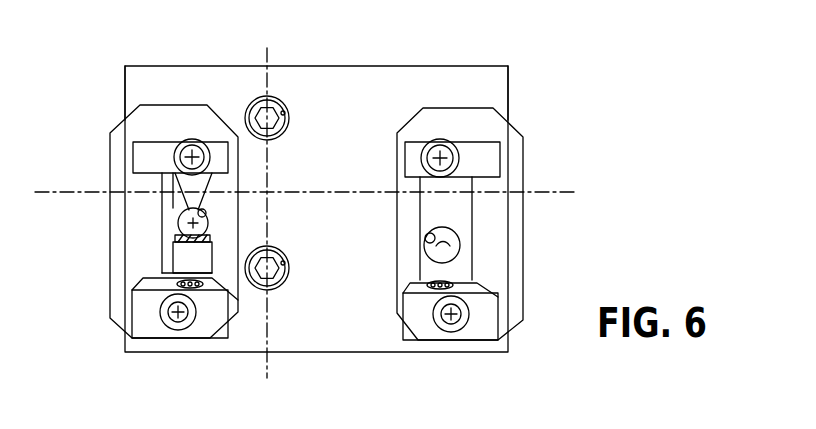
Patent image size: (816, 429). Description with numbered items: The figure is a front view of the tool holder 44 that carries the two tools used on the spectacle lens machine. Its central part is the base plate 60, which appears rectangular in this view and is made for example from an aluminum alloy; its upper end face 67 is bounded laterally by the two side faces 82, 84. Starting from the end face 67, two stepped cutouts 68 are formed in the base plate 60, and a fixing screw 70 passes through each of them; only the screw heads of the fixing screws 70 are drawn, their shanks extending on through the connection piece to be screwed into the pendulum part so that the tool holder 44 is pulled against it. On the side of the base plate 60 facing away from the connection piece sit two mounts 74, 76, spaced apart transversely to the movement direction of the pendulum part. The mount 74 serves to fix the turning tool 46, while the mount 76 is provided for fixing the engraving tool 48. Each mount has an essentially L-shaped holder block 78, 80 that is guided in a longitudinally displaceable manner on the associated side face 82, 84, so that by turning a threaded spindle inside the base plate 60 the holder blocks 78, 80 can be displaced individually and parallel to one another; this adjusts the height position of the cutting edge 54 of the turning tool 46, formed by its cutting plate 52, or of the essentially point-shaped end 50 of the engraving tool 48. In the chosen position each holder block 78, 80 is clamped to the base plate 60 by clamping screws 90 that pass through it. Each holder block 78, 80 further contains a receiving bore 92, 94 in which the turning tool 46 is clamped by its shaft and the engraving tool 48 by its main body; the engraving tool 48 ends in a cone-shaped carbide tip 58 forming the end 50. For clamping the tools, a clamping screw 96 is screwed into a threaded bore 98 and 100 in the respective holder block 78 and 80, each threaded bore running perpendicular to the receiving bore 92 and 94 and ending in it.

The tool holder 44 is at (537, 245).
The turning tool 46 is at (173, 240).
The engraving tool 48 is at (459, 227).
The point-shaped end 50 is at (460, 247).
The cutting plate 52 is at (178, 222).
The cutting edge 54 is at (190, 247).
The tip 58 is at (424, 244).
The base plate 60 is at (363, 104).
The end face 67 is at (177, 80).
The stepped cutouts 68 is at (289, 118).
The fixing screws 70 is at (272, 137).
The mount 74 is at (110, 130).
The mount 76 is at (516, 128).
The holder block 78 is at (118, 160).
The holder block 80 is at (512, 157).
The side face 82 is at (127, 93).
The side face 84 is at (508, 93).
The clamping screws 90 is at (191, 142).
The receiving bore 92 is at (215, 200).
The receiving bore 94 is at (426, 235).
The clamping screw 96 is at (205, 292).
The threaded bore 98 is at (177, 287).
The threaded bore 100 is at (433, 292).